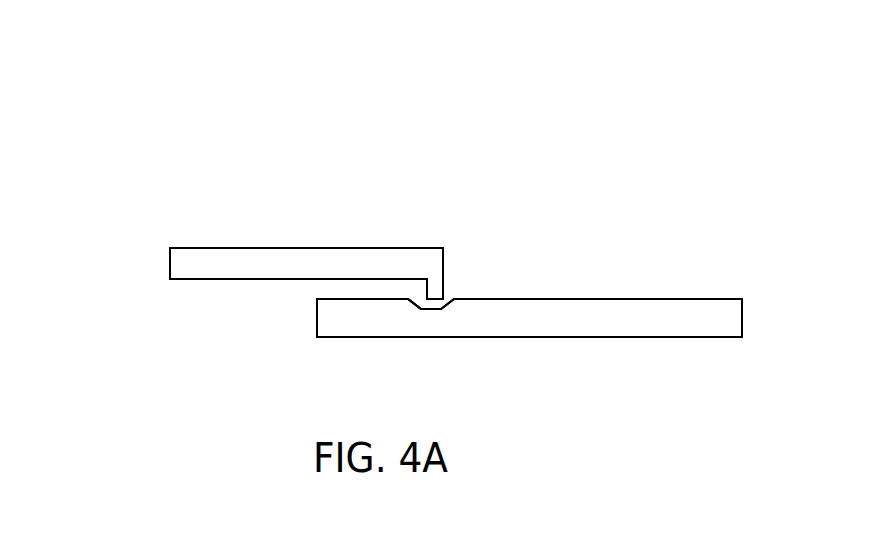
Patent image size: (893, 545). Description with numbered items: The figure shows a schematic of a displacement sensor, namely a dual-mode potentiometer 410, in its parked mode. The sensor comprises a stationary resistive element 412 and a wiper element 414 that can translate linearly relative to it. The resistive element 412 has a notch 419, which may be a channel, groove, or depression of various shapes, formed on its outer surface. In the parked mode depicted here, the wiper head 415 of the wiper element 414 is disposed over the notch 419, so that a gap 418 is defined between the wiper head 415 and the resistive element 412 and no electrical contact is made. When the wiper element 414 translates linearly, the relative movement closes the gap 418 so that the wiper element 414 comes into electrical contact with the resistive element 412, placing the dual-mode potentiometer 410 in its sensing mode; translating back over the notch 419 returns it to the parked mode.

The dual-mode potentiometer 410 is at (150, 112).
The resistive element 412 is at (497, 320).
The wiper element 414 is at (277, 265).
The wiper head 415 is at (436, 288).
The gap 418 is at (455, 303).
The notch 419 is at (413, 300).